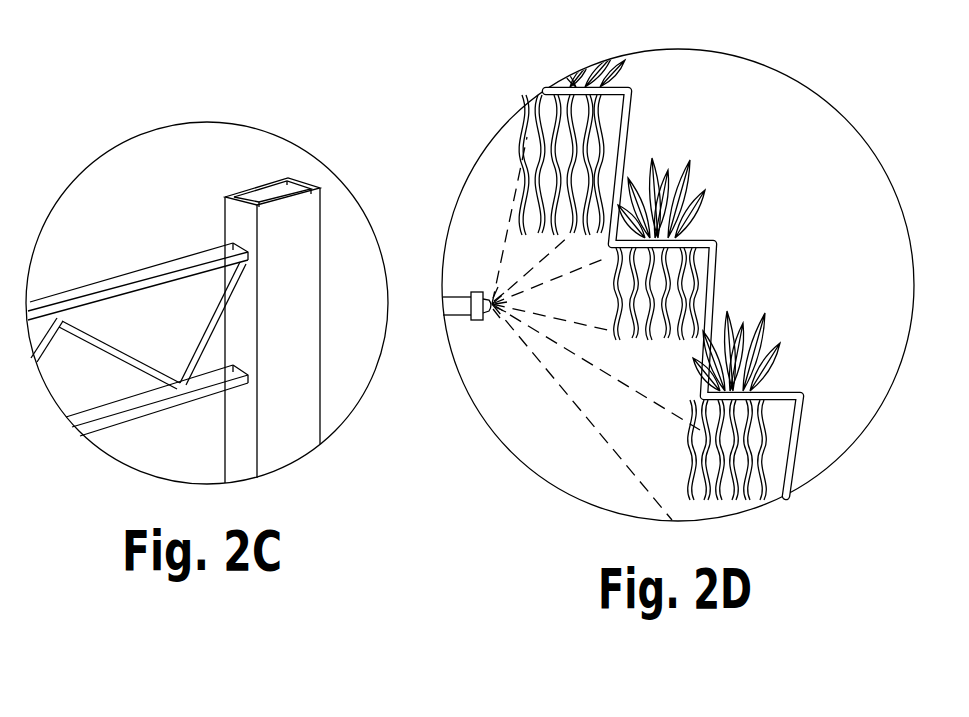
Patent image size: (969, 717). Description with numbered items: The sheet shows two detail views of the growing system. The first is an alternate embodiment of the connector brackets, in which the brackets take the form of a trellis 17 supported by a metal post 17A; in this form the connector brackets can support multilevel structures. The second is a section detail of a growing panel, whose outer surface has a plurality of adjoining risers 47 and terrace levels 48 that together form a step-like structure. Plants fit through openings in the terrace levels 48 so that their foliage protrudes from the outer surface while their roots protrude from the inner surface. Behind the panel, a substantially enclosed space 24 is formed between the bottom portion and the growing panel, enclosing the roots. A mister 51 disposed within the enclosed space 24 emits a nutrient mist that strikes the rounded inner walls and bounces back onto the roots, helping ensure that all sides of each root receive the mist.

In FIG. 2C, the trellis 17 is at (180, 392).
In FIG. 2C, the metal post 17A is at (268, 190).
In FIG. 2D, the enclosed space 24 is at (588, 290).
In FIG. 2D, the riser 47 is at (627, 137).
In FIG. 2D, the terrace level 48 is at (703, 233).
In FIG. 2D, the mister 51 is at (492, 295).